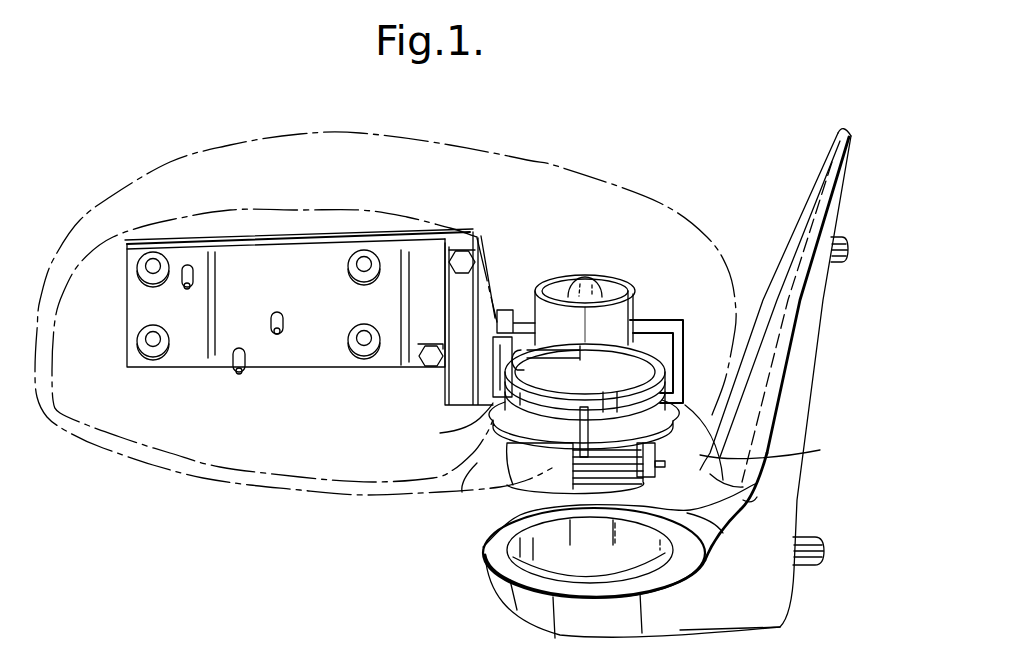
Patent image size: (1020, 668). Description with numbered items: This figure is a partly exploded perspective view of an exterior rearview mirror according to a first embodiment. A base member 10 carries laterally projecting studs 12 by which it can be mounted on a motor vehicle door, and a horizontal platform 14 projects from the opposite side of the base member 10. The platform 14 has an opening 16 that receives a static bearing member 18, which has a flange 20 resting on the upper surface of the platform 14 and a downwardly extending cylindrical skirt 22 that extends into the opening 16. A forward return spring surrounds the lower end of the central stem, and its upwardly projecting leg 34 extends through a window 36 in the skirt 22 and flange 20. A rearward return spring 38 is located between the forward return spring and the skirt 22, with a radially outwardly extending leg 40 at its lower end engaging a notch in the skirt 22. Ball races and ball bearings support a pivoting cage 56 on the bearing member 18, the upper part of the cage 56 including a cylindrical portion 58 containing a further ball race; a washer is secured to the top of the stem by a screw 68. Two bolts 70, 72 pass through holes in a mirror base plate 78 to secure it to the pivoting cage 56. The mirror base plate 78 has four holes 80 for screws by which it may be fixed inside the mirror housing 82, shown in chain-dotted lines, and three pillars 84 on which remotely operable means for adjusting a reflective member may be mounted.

The base member 10 is at (836, 228).
The laterally projecting studs 12 is at (838, 262).
The horizontal platform 14 is at (507, 598).
The opening 16 is at (497, 545).
The static bearing member 18 is at (478, 424).
The flange 20 is at (677, 450).
The cylindrical skirt 22 is at (520, 440).
The upwardly projecting leg 34 is at (583, 432).
The window 36 is at (650, 466).
The rearward return spring 38 is at (596, 478).
The radially outwardly extending leg 40 is at (779, 454).
The pivoting cage 56 is at (683, 344).
The cylindrical portion 58 is at (632, 312).
The screw 68 is at (581, 287).
The bolt 70 is at (470, 262).
The bolt 72 is at (419, 368).
The mirror base plate 78 is at (303, 353).
The holes 80 is at (166, 263).
The mirror housing 82 is at (478, 145).
The pillars 84 is at (277, 316).